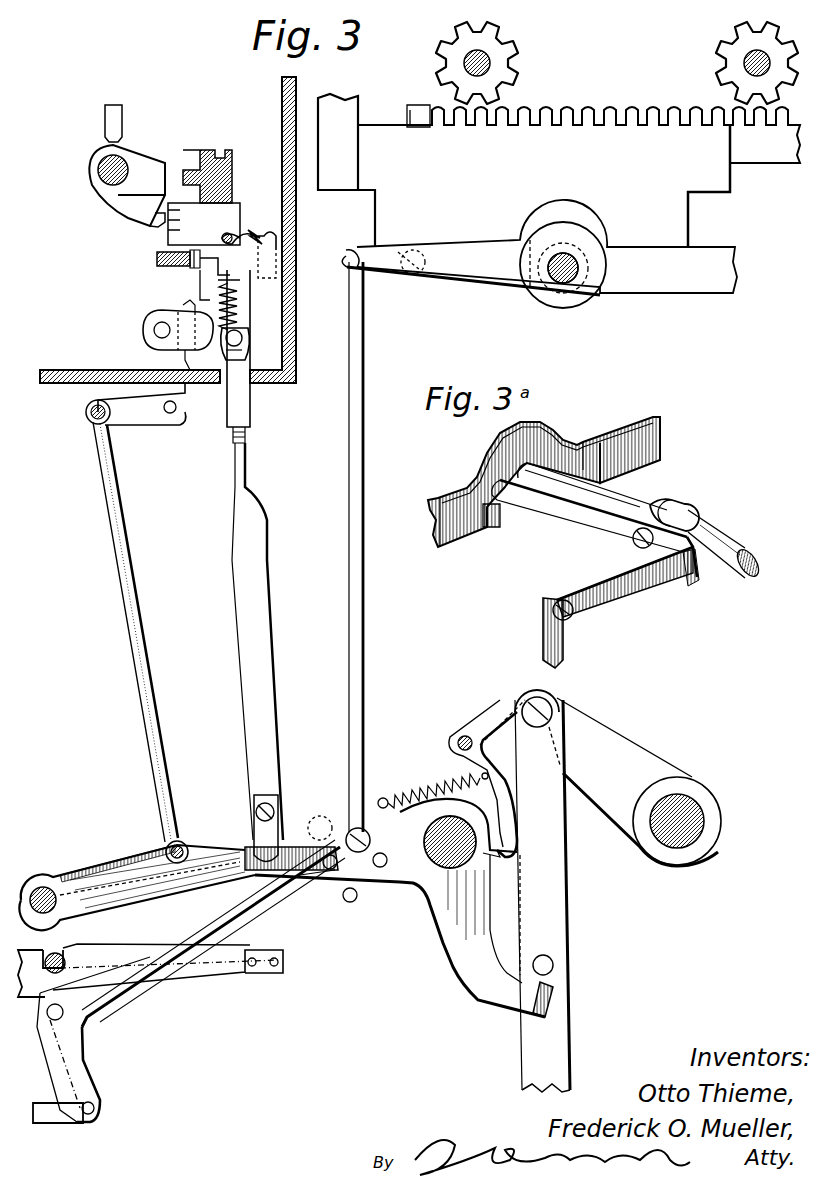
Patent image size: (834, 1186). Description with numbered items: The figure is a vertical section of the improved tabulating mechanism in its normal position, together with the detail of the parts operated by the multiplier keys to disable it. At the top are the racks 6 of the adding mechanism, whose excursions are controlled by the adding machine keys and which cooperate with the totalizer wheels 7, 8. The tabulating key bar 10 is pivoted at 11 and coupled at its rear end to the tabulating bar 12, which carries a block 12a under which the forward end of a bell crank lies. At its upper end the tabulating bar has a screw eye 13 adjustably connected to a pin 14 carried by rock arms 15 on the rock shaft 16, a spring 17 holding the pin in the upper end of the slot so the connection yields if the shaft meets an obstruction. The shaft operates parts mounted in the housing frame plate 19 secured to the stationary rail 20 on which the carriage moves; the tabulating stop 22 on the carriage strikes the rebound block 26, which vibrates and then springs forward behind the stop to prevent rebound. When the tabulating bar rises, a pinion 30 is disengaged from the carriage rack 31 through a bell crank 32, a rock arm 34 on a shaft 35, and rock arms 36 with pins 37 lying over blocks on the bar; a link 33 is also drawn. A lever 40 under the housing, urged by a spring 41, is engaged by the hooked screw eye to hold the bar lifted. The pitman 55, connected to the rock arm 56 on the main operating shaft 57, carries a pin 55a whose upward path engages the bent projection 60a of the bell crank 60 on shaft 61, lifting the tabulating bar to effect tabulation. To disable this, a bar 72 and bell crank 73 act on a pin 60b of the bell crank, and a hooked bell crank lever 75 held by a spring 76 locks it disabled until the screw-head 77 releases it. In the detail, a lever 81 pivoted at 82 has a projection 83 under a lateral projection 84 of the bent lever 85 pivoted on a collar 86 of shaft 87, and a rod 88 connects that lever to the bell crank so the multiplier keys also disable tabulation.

In FIG. 3, the racks 6 is at (622, 122).
In FIG. 3, the totalizer wheel 7 is at (500, 55).
In FIG. 3, the totalizer wheel 8 is at (737, 47).
In FIG. 3, the tabulating key bar 10 is at (223, 975).
In FIG. 3, the pivot 11 is at (58, 955).
In FIG. 3, the tabulating bar 12 is at (246, 603).
In FIG. 3, the block on tabulating bar 12a is at (282, 830).
In FIG. 3, the screw eye 13 is at (241, 403).
In FIG. 3, the pin 14 is at (242, 340).
In FIG. 3, the rock arms 15 is at (170, 373).
In FIG. 3, the rock shaft 16 is at (154, 327).
In FIG. 3, the spring 17 is at (238, 318).
In FIG. 3, the housing frame plate 19 is at (204, 224).
In FIG. 3, the stationary rail 20 is at (233, 170).
In FIG. 3, the tabulating stop 22 is at (145, 168).
In FIG. 3, the rebound block 26 is at (158, 212).
In FIG. 3, the pinion 30 is at (190, 268).
In FIG. 3, the rack 31 is at (155, 258).
In FIG. 3, the bell crank 32 is at (150, 415).
In FIG. 3, the rod 33 is at (140, 655).
In FIG. 3, the rock arm 34 is at (120, 848).
In FIG. 3, the shaft 35 is at (50, 883).
In FIG. 3, the rock arms 36 is at (212, 857).
In FIG. 3, the pins 37 is at (322, 842).
In FIG. 3, the lever 40 is at (233, 232).
In FIG. 3, the spring 41 is at (266, 244).
In FIG. 3, the bar or pitman 55 is at (568, 892).
In FIG. 3, the pin 55a is at (553, 960).
In FIG. 3, the rock arm 56 is at (625, 742).
In FIG. 3, the main operating shaft 57 is at (697, 812).
In FIG. 3, the bell crank 60 is at (447, 945).
In FIG. 3, the projection 60a is at (564, 1010).
In FIG. 3, the pin 60b is at (352, 902).
In FIG. 3, the shaft 61 is at (440, 860).
In FIG. 3, the bar 72 is at (52, 1125).
In FIG. 3, the bell crank 73 is at (135, 978).
In FIG. 3, the hooked bell crank lever 75 is at (492, 712).
In FIG. 3, the spring 76 is at (390, 796).
In FIG. 3, the screw-head 77 is at (548, 705).
In FIG. 3, the lever 81 is at (541, 246).
In FIG. 3A, the lever 81 is at (635, 435).
In FIG. 3, the pivot 82 is at (415, 252).
In FIG. 3A, the projection 83 is at (495, 530).
In FIG. 3A, the lateral projection 84 is at (577, 513).
In FIG. 3, the lever 85 is at (485, 276).
In FIG. 3A, the lever 85 is at (648, 598).
In FIG. 3, the collar 86 is at (563, 290).
In FIG. 3A, the collar 86 is at (692, 515).
In FIG. 3, the shaft 87 is at (578, 282).
In FIG. 3A, the shaft 87 is at (740, 575).
In FIG. 3, the rod or bar 88 is at (352, 508).
In FIG. 3A, the rod or bar 88 is at (543, 642).